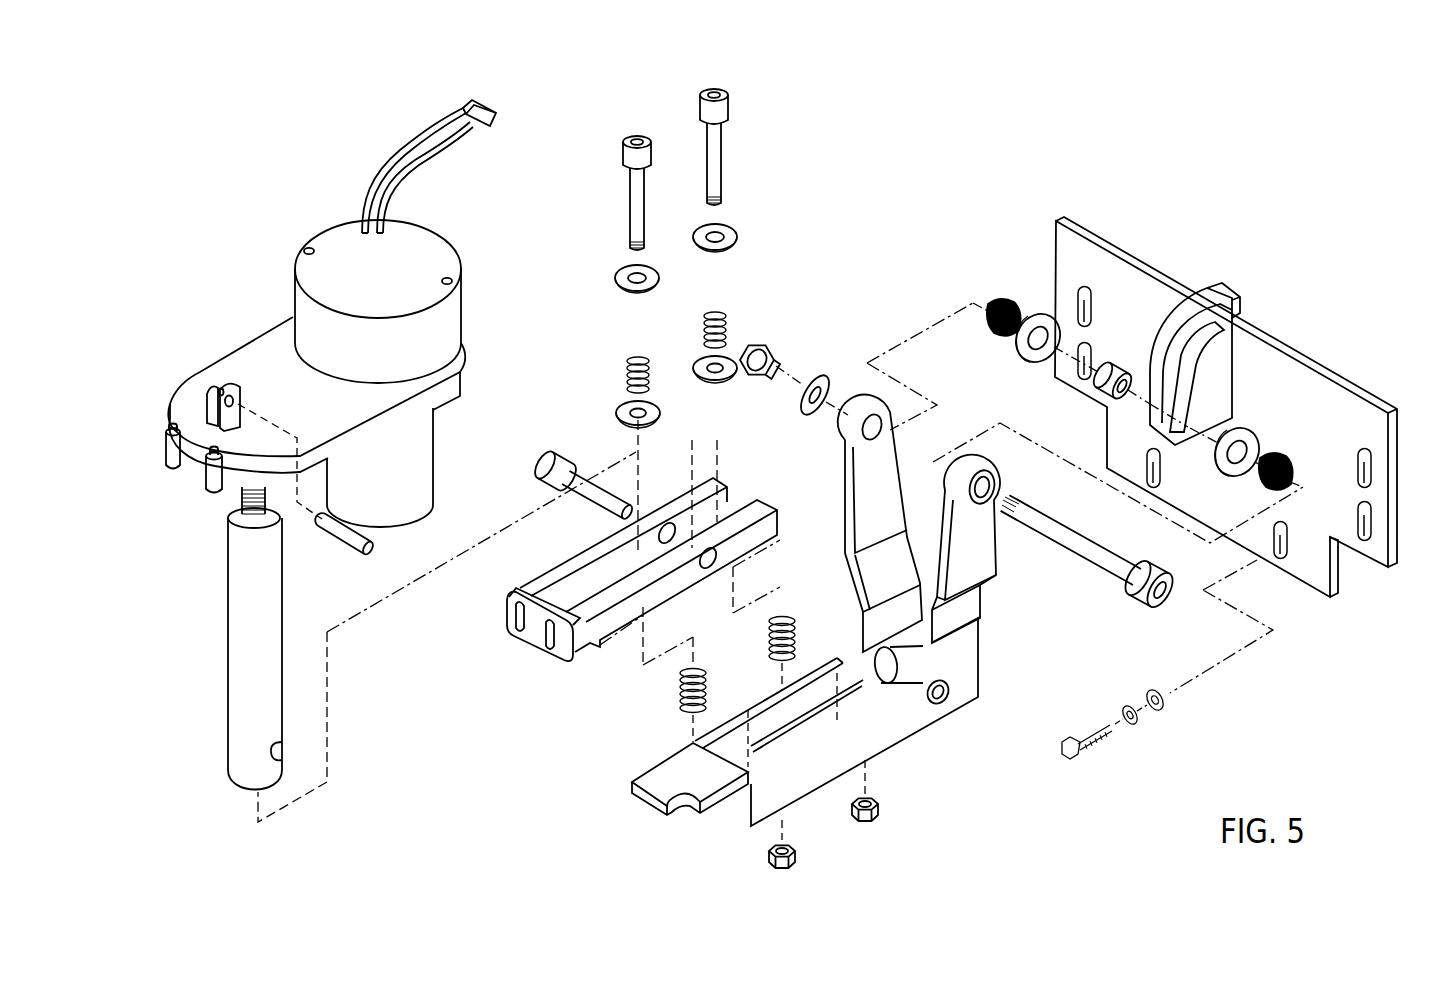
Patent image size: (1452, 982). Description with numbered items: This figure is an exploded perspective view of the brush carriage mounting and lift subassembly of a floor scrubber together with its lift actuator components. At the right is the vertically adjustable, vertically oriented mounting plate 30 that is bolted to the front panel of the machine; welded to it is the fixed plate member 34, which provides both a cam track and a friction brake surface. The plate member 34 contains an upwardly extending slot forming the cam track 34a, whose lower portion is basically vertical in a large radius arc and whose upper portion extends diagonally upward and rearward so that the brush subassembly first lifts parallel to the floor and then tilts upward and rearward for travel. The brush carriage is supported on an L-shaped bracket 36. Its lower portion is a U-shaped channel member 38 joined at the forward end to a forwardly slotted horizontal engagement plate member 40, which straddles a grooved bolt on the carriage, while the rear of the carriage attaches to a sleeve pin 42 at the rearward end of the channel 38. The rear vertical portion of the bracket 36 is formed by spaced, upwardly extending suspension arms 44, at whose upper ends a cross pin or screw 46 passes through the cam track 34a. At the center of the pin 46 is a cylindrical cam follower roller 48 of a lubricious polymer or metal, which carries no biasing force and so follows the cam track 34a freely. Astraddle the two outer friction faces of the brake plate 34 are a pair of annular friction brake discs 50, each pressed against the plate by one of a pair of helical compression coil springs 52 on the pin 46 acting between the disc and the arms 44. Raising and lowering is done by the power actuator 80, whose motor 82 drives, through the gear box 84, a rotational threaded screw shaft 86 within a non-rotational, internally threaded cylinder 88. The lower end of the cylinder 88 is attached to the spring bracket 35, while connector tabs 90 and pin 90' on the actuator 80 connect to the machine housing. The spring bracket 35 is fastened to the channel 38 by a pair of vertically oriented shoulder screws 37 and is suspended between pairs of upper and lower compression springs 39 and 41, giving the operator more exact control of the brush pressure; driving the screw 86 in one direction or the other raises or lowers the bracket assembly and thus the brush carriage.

The mounting plate 30 is at (1372, 420).
The fixed plate member 34 is at (1232, 362).
The cam track 34a is at (1227, 292).
The spring bracket 35 is at (600, 628).
The L-shaped bracket 36 is at (1007, 666).
The shoulder screws 37 is at (630, 196).
The U-shaped channel member 38 is at (905, 735).
The upper compression springs 39 is at (628, 380).
The horizontal engagement plate member 40 is at (650, 775).
The lower compression springs 41 is at (708, 690).
The sleeve pin 42 is at (957, 636).
The suspension arms 44 is at (890, 450).
The cross pin or screw 46 is at (1100, 565).
The cam follower roller 48 is at (1114, 366).
The friction brake discs 50 is at (1038, 314).
The helical compression coil springs 52 is at (990, 306).
The power actuator 80 is at (280, 222).
The motor 82 is at (420, 462).
The gear box 84 is at (178, 408).
The threaded screw shaft 86 is at (238, 505).
The internally threaded cylinder 88 is at (246, 622).
The connector tabs 90 is at (205, 383).
The pin 90' is at (345, 551).